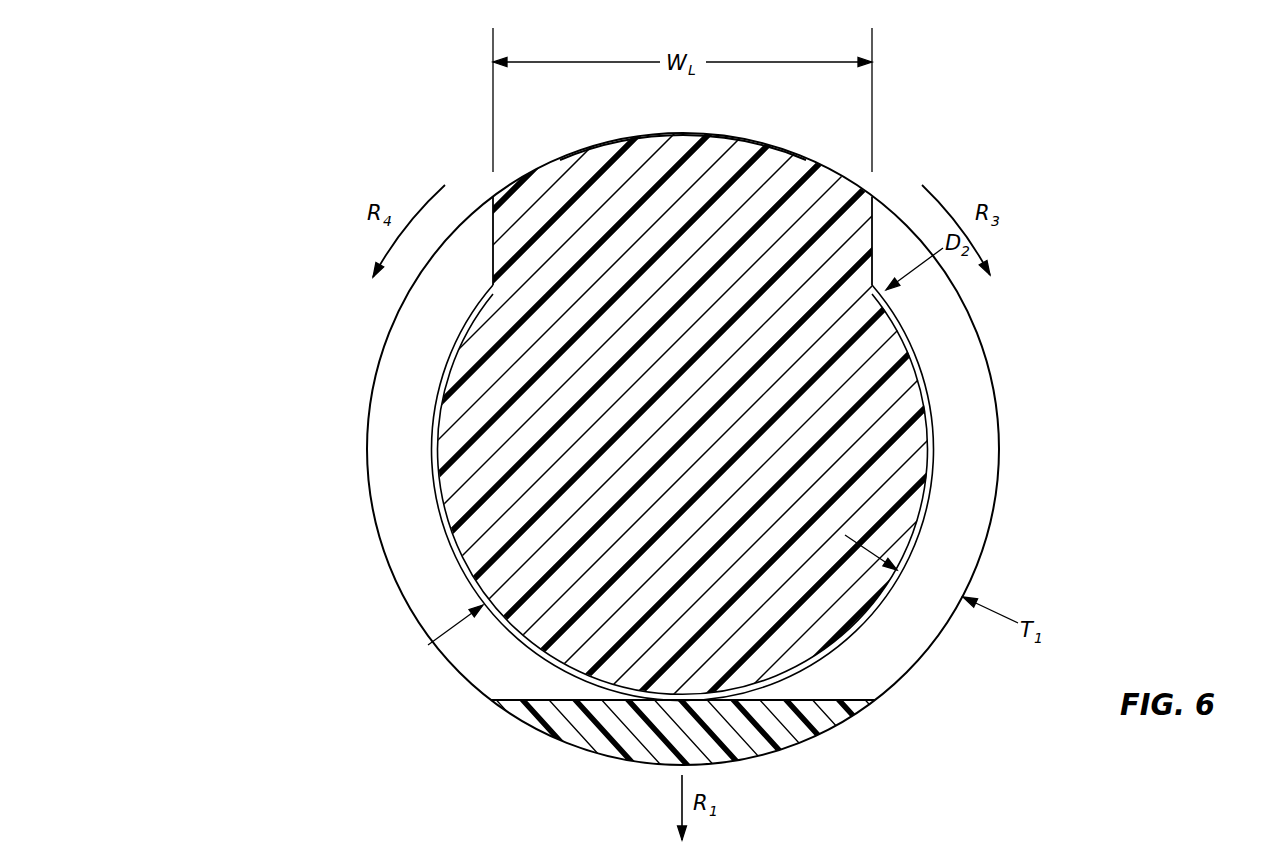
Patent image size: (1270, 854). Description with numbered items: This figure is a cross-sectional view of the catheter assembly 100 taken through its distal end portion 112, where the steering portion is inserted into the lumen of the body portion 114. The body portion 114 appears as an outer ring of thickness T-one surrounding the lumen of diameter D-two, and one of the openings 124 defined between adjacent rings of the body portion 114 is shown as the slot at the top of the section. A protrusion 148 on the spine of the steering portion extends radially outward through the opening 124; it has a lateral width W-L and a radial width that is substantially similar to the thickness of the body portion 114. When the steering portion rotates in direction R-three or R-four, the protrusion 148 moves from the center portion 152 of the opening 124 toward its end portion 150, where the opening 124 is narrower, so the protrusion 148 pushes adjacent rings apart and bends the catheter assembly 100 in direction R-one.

The catheter assembly 100 is at (1143, 310).
The distal end portion 112 is at (485, 548).
The body portion 114 is at (398, 487).
The openings 124 is at (940, 527).
The protrusions 148 is at (683, 133).
The end portion 150 is at (917, 628).
The center portion 152 is at (480, 228).